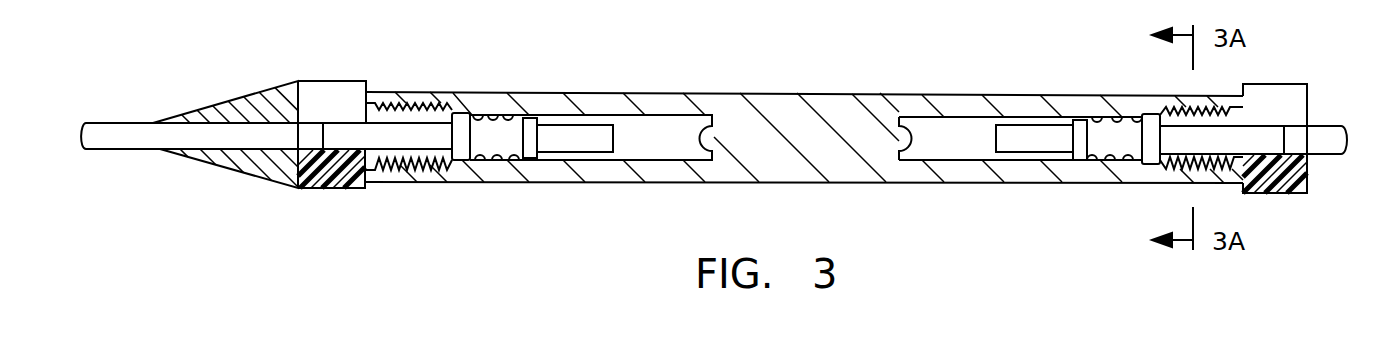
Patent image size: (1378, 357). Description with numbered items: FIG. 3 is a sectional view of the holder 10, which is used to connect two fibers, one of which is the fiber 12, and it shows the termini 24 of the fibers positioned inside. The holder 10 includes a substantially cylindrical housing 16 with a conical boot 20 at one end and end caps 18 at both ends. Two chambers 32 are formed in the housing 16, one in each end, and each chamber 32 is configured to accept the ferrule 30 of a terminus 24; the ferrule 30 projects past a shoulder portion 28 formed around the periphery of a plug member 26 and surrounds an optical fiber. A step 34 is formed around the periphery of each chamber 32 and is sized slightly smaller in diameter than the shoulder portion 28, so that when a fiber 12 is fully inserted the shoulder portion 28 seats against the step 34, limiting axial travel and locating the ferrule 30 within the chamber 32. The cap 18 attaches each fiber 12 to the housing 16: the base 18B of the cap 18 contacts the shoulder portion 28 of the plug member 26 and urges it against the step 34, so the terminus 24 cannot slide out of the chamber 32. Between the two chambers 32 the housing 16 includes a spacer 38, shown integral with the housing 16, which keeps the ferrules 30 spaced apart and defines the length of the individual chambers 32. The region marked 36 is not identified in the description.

The holder 10 is at (817, 58).
The fiber 12 is at (138, 141).
The housing 16 is at (676, 93).
The end cap 18 is at (340, 183).
The base of cap 18B is at (458, 162).
The boot 20 is at (241, 101).
The terminus 24 is at (521, 122).
The plug member 26 is at (404, 143).
The shoulder portion 28 is at (461, 118).
The ferrule 30 is at (578, 130).
The chamber 32 is at (682, 151).
The step 34 is at (471, 159).
The counterbore 36 is at (367, 118).
The spacer 38 is at (852, 95).